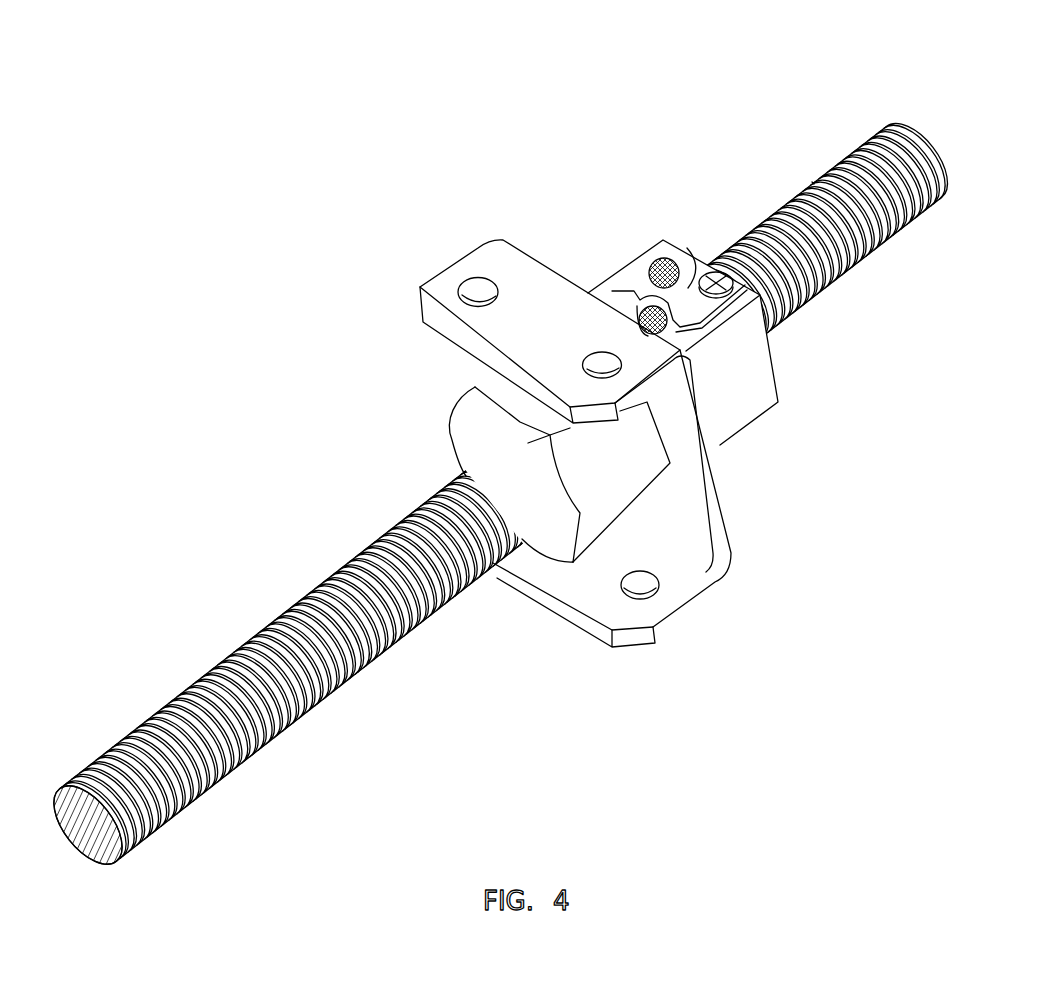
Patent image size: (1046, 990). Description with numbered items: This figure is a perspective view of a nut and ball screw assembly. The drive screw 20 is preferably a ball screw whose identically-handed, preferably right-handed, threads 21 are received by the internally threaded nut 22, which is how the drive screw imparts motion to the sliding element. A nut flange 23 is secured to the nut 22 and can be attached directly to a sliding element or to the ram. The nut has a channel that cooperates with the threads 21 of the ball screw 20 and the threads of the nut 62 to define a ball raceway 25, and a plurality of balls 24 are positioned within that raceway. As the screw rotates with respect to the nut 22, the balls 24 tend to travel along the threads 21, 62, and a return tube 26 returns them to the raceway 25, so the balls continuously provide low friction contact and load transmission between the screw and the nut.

The drive screw 20 is at (903, 128).
The threads 21 is at (813, 183).
The nut 22 is at (751, 407).
The nut flange 23 is at (468, 260).
The balls 24 is at (666, 257).
The ball raceway 25 is at (685, 267).
The return tube 26 is at (652, 256).
The threads of the nut 62 is at (452, 437).